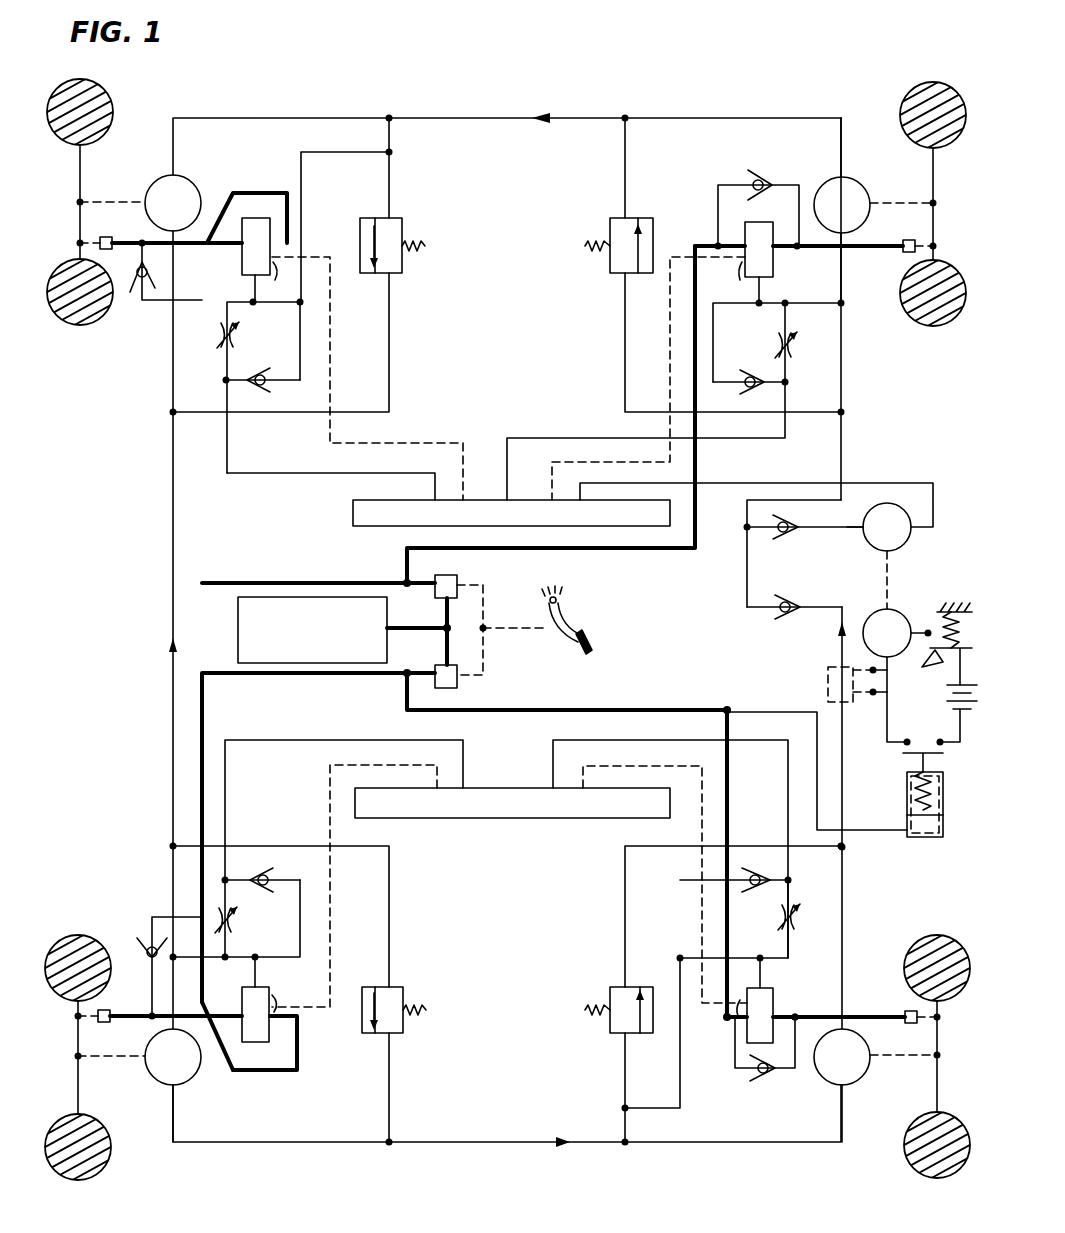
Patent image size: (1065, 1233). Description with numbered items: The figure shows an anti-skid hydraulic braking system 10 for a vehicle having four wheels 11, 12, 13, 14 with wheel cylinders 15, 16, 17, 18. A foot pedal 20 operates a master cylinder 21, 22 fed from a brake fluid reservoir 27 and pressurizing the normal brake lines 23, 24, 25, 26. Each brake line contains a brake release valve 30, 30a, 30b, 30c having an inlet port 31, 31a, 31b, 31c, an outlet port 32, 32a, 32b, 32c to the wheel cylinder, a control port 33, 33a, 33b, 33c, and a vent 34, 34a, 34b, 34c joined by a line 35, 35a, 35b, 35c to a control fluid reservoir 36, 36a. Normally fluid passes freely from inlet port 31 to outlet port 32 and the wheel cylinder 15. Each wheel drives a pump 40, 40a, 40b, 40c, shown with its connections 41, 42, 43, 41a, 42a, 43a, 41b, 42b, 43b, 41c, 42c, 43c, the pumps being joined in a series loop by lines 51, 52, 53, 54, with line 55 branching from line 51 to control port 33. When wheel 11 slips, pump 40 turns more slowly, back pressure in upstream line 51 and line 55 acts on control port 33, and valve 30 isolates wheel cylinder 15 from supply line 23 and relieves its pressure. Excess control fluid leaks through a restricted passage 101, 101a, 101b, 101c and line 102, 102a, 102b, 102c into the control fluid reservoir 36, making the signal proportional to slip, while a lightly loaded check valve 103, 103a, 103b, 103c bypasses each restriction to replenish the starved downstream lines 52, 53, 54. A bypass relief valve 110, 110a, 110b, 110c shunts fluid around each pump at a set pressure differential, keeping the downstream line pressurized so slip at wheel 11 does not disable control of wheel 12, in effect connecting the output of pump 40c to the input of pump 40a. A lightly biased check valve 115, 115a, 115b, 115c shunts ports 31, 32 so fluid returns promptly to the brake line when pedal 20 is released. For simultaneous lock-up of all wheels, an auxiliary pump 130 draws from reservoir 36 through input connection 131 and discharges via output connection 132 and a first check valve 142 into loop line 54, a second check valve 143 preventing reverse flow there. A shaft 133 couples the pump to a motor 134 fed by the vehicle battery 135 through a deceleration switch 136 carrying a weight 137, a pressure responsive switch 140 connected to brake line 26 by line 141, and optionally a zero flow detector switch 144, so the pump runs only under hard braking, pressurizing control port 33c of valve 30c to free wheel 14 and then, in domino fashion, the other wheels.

The braking system 10 is at (505, 97).
The wheel 11 is at (108, 100).
The second wheel 12 is at (100, 936).
The rear right wheel 13 is at (950, 936).
The wheel 14 is at (943, 83).
The wheel cylinder 15 is at (116, 237).
The wheel brake cylinder 16 is at (112, 1008).
The wheel brake cylinder 17 is at (908, 1010).
The wheel cylinder 18 is at (915, 240).
The foot pedal 20 is at (566, 604).
The master cylinder 21 is at (458, 580).
The master cylinder 22 is at (458, 682).
The brake line 23 is at (266, 583).
The hydraulic brake line 24 is at (650, 558).
The hydraulic brake line 25 is at (242, 680).
The brake line 26 is at (628, 708).
The brake fluid reservoir 27 is at (237, 630).
The brake release valve 30 is at (250, 212).
The inlet port 31 is at (272, 242).
The outlet port 32 is at (228, 262).
The control port 33 is at (252, 294).
The vent 34 is at (269, 281).
The line 35 is at (333, 340).
The control fluid reservoir 36 is at (480, 498).
The pump 40 is at (188, 181).
The pump inlet 41 is at (164, 180).
The pump outlet 42 is at (160, 238).
The pump drive connection 43 is at (116, 202).
The upstream line 51 is at (452, 118).
The downstream line 52 is at (170, 580).
The line 53 is at (448, 1152).
The loop line 54 is at (846, 442).
The line 55 is at (340, 152).
The restricted passage 101 is at (240, 336).
The line 102 is at (275, 470).
The check valve 103 is at (268, 384).
The bypass relief valve 110 is at (405, 265).
The check valve 115 is at (138, 292).
The brake release valve 30c is at (738, 220).
The valve body 31c is at (706, 244).
The inlet port 32c is at (790, 250).
The control port 33c is at (766, 298).
The valve member 34c is at (721, 274).
The control line 35c is at (668, 330).
The upstream pump 40c is at (856, 180).
The pump inlet 41c is at (846, 240).
The pump outlet 42c is at (834, 180).
The pump drive connection 43c is at (905, 203).
The flow restrictor 101c is at (776, 346).
The return line 102c is at (595, 432).
The check valve 103c is at (746, 390).
The pressure relief valve 110c is at (612, 272).
The check valve 115c is at (765, 178).
The pressure modulating valve 30a is at (250, 1002).
The valve body 31a is at (298, 1030).
The inlet port 32a is at (225, 1016).
The control port 33a is at (257, 978).
The valve member 34a is at (297, 993).
The control line 35a is at (333, 920).
The control fluid reservoir 36a is at (496, 818).
The pump 40a is at (164, 1084).
The pump inlet 41a is at (160, 1022).
The pump outlet 42a is at (180, 1084).
The pump drive connection 43a is at (106, 1056).
The flow restrictor 101a is at (236, 925).
The return line 102a is at (338, 740).
The check valve 103a is at (262, 862).
The relief valve 110a is at (398, 988).
The check valve 115a is at (148, 935).
The pressure modulating valve 30b is at (748, 1046).
The valve body 31b is at (738, 1022).
The inlet port 32b is at (815, 1014).
The control port 33b is at (766, 980).
The valve member 34b is at (735, 1016).
The control line 35b is at (700, 866).
The pump 40b is at (830, 1080).
The pump inlet 41b is at (846, 1088).
The pump outlet 42b is at (852, 1028).
The pump drive connection 43b is at (898, 1056).
The flow restrictor 101b is at (796, 910).
The return line 102b is at (748, 752).
The check valve 103b is at (770, 876).
The pressure relief valve 110b is at (612, 1036).
The check valve 115b is at (762, 1076).
The auxiliary hydraulic pump 130 is at (902, 546).
The input connection 131 is at (918, 483).
The output connection 132 is at (850, 532).
The shaft 133 is at (880, 584).
The motor 134 is at (866, 644).
The source of current 135 is at (945, 712).
The deceleration switch 136 is at (922, 618).
The weight 137 is at (925, 672).
The pressure responsive switch 140 is at (906, 780).
The line 141 is at (878, 838).
The first check valve 142 is at (770, 540).
The second check valve 143 is at (775, 612).
The zero flow detector switch 144 is at (826, 688).